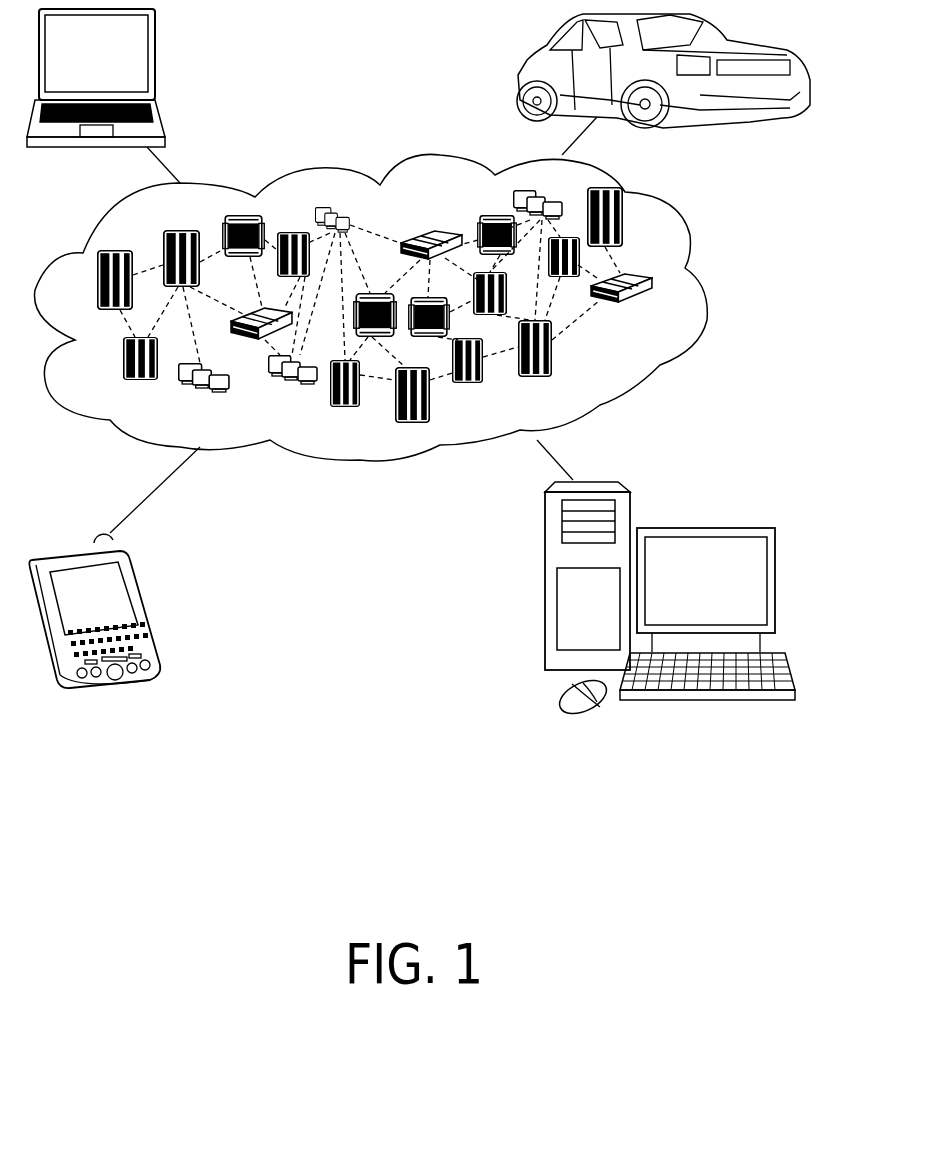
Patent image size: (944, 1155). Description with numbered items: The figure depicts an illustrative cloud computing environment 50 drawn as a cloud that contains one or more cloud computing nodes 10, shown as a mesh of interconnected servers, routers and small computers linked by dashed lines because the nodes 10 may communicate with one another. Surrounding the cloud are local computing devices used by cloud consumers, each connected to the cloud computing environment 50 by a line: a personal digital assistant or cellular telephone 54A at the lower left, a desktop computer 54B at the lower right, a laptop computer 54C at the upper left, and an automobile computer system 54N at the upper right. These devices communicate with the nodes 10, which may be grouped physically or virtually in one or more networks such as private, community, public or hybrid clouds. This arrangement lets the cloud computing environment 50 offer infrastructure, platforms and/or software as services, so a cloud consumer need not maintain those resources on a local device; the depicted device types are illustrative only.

The cloud computing nodes 10 is at (662, 313).
The cloud computing environment 50 is at (707, 287).
The personal digital assistant or cellular telephone 54A is at (146, 603).
The desktop computer 54B is at (703, 528).
The laptop computer 54C is at (156, 61).
The automobile computer system 54N is at (520, 72).